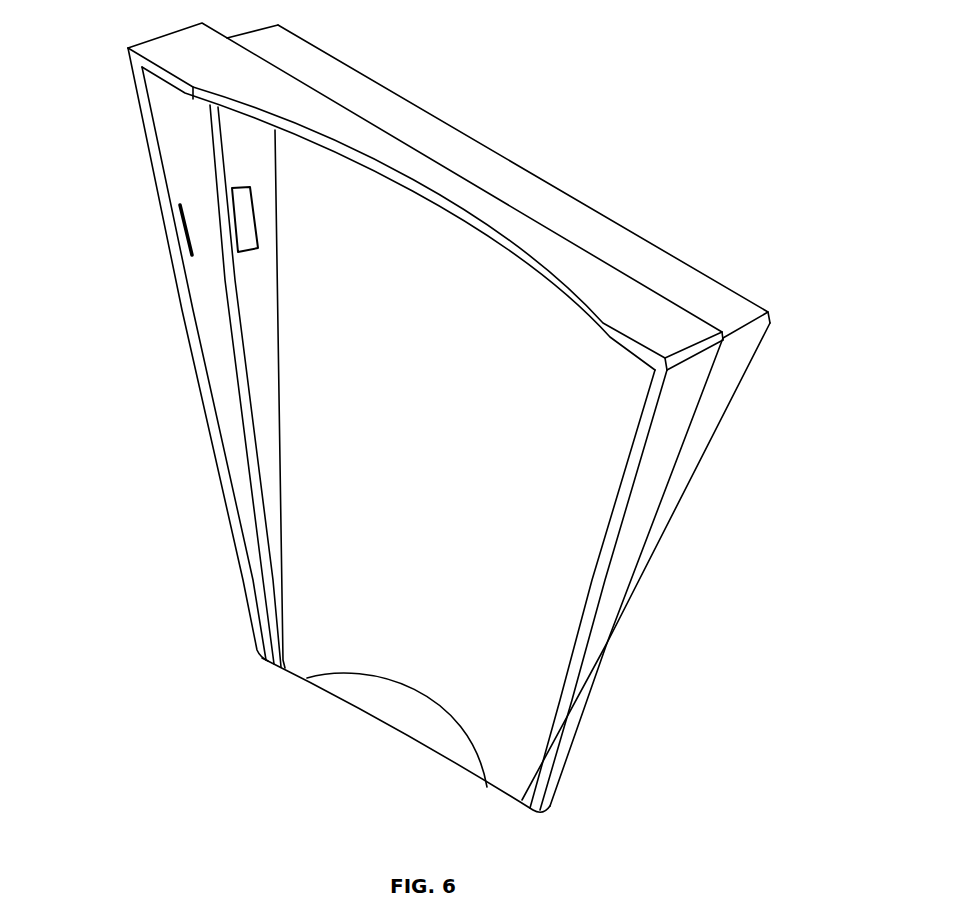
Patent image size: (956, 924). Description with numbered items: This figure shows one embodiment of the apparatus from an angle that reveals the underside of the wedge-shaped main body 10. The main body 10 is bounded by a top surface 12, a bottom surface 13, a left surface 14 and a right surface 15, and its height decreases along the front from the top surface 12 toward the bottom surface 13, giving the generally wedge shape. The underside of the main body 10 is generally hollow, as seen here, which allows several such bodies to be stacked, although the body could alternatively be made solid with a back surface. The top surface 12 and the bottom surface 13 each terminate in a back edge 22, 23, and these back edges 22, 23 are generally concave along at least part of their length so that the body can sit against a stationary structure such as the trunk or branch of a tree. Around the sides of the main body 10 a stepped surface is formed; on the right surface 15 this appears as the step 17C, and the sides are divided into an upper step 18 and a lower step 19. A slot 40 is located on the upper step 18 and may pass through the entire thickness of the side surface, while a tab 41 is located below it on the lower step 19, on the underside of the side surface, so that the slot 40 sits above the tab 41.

The main body 10 is at (763, 268).
The top surface 12 is at (613, 282).
The bottom surface 13 is at (488, 788).
The left surface 14 is at (707, 417).
The right surface 15 is at (138, 115).
The step 17C is at (210, 122).
The upper step 18 is at (258, 390).
The lower step 19 is at (213, 343).
The back edge 22 is at (480, 227).
The back edge 23 is at (398, 717).
The slot 40 is at (242, 213).
The tab 41 is at (187, 223).